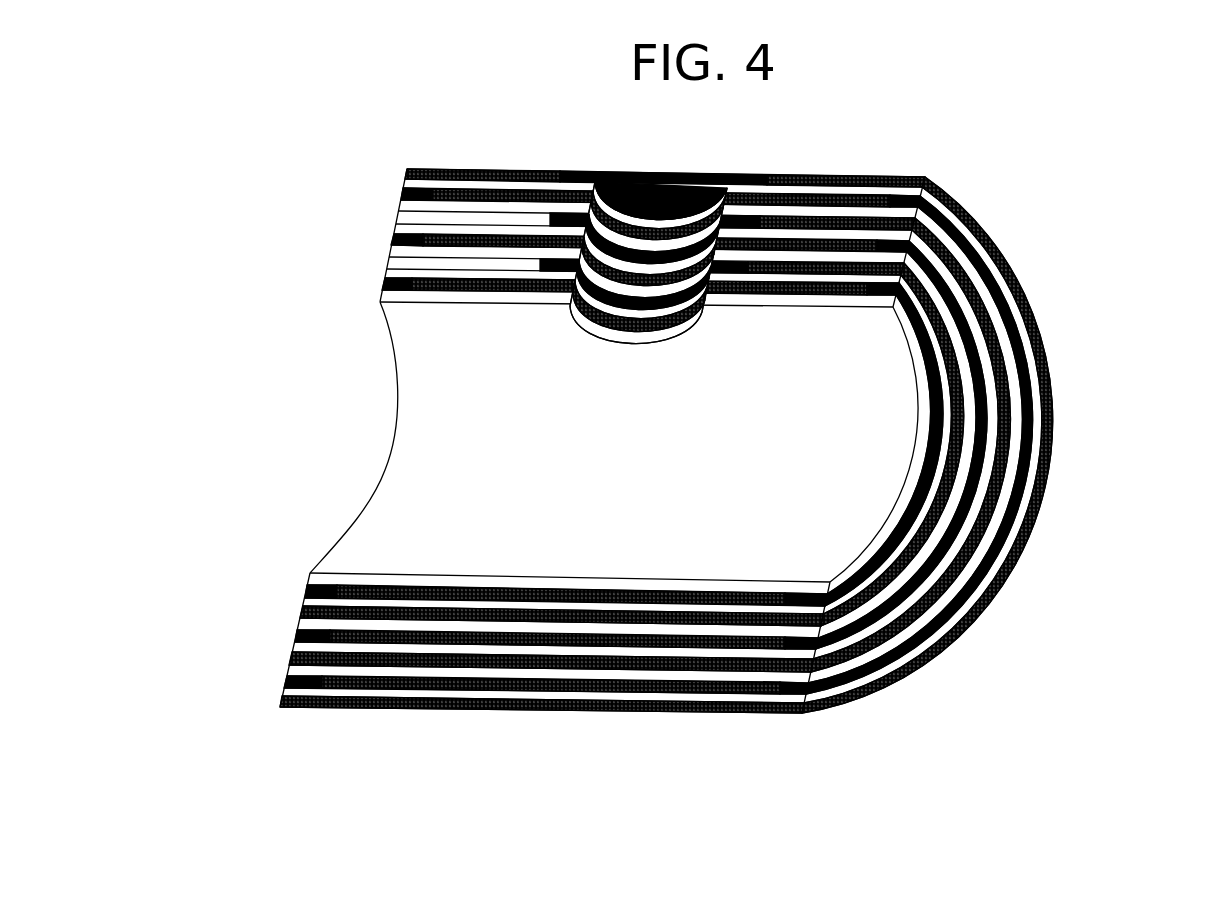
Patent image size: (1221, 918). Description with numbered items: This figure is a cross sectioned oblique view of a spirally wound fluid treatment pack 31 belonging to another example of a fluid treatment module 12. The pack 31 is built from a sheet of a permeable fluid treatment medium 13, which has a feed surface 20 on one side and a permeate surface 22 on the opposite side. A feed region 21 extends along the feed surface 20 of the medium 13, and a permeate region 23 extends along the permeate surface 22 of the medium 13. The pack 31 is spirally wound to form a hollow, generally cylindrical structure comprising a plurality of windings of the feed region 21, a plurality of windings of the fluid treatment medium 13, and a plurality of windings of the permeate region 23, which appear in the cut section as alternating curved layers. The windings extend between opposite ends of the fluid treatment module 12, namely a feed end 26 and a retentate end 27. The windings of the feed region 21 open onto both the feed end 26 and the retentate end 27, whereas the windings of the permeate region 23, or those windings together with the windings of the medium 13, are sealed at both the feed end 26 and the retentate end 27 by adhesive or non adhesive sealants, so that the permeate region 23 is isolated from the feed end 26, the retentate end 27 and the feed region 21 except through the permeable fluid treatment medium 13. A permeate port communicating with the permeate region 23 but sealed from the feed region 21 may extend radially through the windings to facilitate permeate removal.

The fluid treatment module 12 is at (669, 458).
The spirally wound fluid treatment pack 31 is at (669, 458).
The feed end 26 is at (390, 245).
The retentate end 27 is at (1007, 385).
The permeate surface 22 is at (433, 615).
The feed surface 20 is at (696, 618).
The permeate region 23 is at (477, 640).
The permeable fluid treatment medium 13 is at (622, 647).
The feed region 21 is at (733, 657).